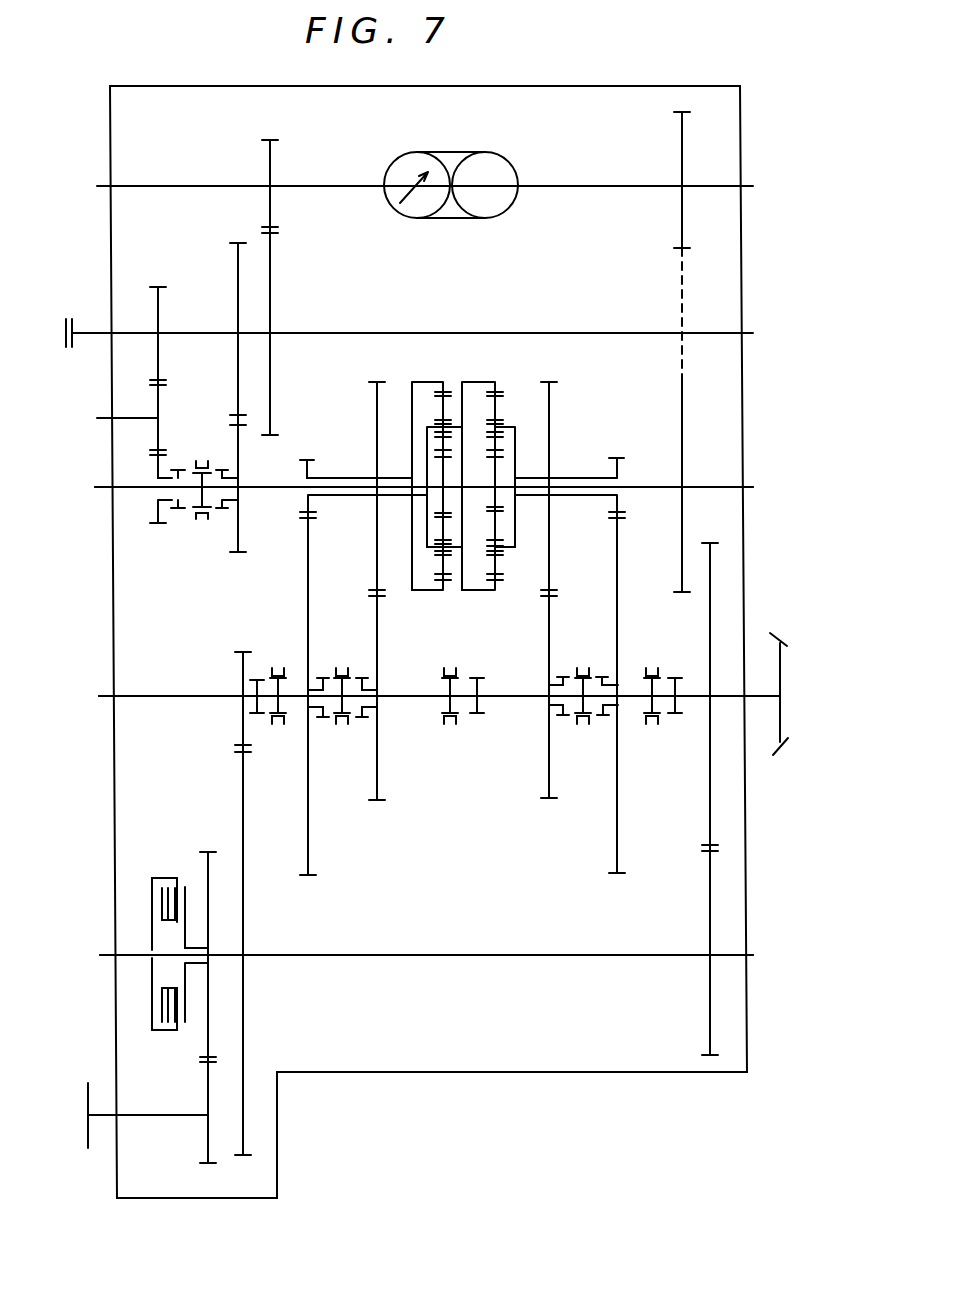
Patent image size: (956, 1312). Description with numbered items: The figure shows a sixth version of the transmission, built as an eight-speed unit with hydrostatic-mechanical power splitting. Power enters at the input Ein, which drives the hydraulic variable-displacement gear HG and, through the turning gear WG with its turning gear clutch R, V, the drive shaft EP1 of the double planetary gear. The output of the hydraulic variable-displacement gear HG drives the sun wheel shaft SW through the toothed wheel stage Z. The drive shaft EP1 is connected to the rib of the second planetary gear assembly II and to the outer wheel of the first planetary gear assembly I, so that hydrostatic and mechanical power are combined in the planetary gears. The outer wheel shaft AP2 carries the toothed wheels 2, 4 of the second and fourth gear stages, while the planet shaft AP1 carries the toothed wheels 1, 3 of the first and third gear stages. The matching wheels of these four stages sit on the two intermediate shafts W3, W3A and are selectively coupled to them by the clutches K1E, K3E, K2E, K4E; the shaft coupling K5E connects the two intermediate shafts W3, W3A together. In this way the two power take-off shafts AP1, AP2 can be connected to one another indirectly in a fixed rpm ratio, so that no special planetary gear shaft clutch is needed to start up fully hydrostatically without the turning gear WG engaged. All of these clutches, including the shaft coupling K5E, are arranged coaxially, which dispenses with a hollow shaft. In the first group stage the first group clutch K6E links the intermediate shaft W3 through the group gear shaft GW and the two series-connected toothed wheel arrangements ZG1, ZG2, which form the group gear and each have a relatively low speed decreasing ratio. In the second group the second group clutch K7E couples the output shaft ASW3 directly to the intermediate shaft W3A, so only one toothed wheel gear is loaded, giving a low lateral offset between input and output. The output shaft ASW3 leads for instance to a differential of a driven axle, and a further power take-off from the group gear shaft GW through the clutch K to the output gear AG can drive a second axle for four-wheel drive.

The input Ein is at (88, 330).
The hydraulic variable-displacement gear HG is at (504, 206).
The toothed wheel stage Z is at (668, 372).
The turning gear WG is at (212, 437).
The turning gear clutch (reverse) R is at (178, 512).
The turning gear clutch (forward) V is at (222, 512).
The drive shaft EP1 is at (268, 492).
The outer wheel shaft AP2 is at (345, 498).
The toothed wheel of 2nd gear 2 is at (309, 478).
The toothed wheel of 4th gear 4 is at (375, 405).
The second planetary gear assembly II is at (437, 365).
The first planetary gear assembly I is at (490, 365).
The toothed wheel of 3rd gear 3 is at (552, 408).
The planet shaft AP1 is at (586, 478).
The toothed wheel of 1st gear 1 is at (620, 471).
The sun wheel shaft SW is at (665, 485).
The intermediate shaft W3 is at (405, 693).
The intermediate shaft W3A is at (518, 693).
The toothed wheel arrangement ZG1 is at (241, 778).
The first group clutch K6E is at (281, 666).
The clutch of 2nd gear K2E is at (324, 675).
The clutch of 4th gear K4E is at (366, 718).
The shaft coupling K5E is at (475, 675).
The clutch of 3rd gear K3E is at (558, 678).
The clutch of 1st gear K1E is at (599, 719).
The second group clutch K7E is at (646, 672).
The output shaft ASW3 is at (757, 697).
The toothed wheel arrangement ZG2 is at (709, 883).
The group gear shaft GW is at (423, 950).
The clutch K is at (170, 1030).
The output gear AG is at (192, 1067).